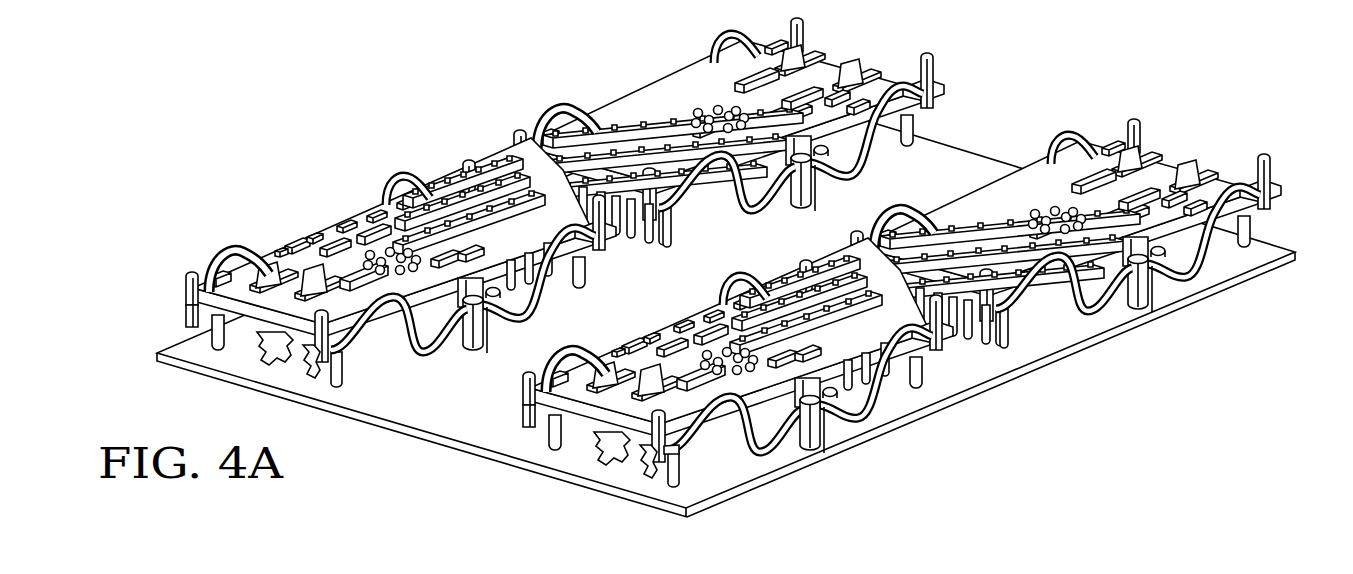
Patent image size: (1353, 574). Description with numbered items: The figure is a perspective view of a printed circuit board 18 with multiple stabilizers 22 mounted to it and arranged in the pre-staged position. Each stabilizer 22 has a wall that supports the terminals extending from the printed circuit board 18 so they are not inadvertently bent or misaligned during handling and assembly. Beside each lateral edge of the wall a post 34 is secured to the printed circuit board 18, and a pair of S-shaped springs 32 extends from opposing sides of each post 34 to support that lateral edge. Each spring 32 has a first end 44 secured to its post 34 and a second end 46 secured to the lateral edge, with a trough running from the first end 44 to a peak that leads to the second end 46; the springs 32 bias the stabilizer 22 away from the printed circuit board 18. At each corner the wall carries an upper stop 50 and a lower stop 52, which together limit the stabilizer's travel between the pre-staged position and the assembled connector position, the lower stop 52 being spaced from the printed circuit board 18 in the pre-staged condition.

The printed circuit board 18 is at (378, 420).
The stabilizer 22 is at (300, 227).
The spring 32 is at (767, 457).
The post 34 is at (828, 427).
The first end 44 is at (808, 422).
The second end 46 is at (703, 433).
The upper stop 50 is at (520, 388).
The lower stop 52 is at (523, 427).